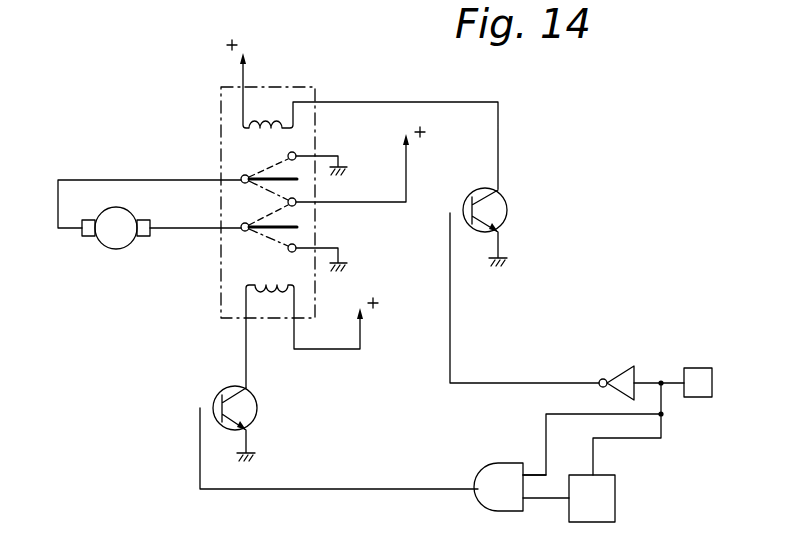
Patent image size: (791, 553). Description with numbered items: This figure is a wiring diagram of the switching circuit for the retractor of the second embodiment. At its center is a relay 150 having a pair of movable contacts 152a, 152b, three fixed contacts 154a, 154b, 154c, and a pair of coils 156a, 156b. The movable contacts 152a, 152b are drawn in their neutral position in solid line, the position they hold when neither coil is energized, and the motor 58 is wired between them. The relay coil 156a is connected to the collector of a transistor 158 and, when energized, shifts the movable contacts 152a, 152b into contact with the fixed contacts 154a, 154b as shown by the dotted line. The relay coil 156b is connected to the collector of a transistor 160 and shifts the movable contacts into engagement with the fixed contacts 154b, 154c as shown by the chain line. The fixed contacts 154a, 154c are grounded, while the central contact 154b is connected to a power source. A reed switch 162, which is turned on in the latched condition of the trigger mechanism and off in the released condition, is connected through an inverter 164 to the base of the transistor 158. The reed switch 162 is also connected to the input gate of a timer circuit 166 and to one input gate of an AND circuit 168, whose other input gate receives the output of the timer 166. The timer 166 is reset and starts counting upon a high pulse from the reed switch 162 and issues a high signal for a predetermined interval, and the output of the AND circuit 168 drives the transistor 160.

The relay 150 is at (219, 106).
The movable contact 152a is at (275, 177).
The movable contact 152b is at (275, 225).
The fixed contact 154a is at (295, 152).
The fixed contact 154b is at (295, 199).
The fixed contact 154c is at (295, 244).
The relay coil 156a is at (277, 112).
The relay coil 156b is at (262, 302).
The motor 58 is at (116, 249).
The transistor 158 is at (507, 207).
The transistor 160 is at (221, 392).
The reed switch 162 is at (693, 367).
The inverter 164 is at (619, 368).
The timer circuit 166 is at (616, 494).
The AND circuit 168 is at (482, 469).